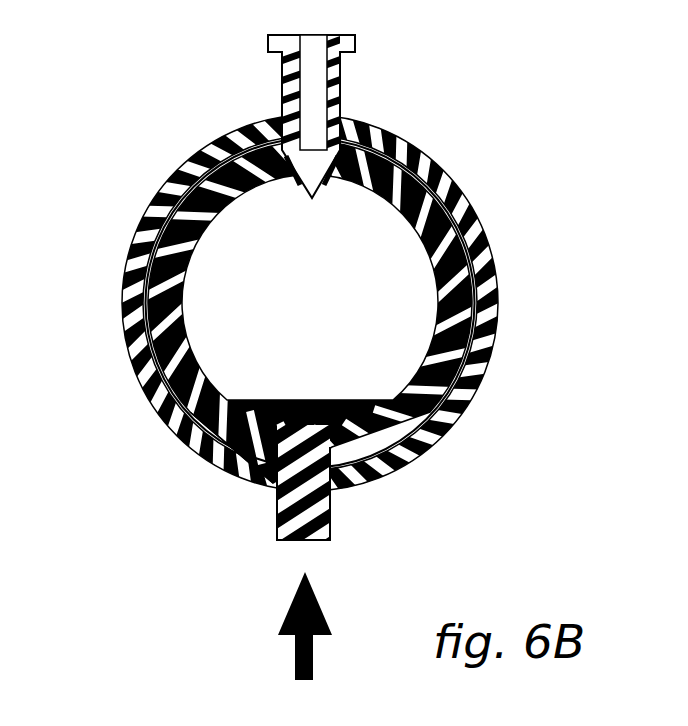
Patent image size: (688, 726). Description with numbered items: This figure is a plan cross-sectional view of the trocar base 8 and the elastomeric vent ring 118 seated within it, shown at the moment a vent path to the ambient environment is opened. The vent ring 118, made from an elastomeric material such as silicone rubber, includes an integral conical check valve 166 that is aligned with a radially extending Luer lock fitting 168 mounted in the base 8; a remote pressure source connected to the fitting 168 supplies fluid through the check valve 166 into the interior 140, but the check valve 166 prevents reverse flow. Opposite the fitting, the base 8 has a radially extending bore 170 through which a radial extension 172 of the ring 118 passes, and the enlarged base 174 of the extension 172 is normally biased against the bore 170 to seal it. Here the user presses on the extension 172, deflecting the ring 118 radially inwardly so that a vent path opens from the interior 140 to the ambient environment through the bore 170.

The trocar base 8 is at (180, 172).
The vent ring 118 is at (168, 268).
The interior 140 is at (318, 333).
The conical check valve 166 is at (453, 233).
The Luer lock fitting 168 is at (340, 62).
The bore 170 is at (275, 475).
The radial extension 172 is at (330, 510).
The enlarged base 174 is at (213, 467).